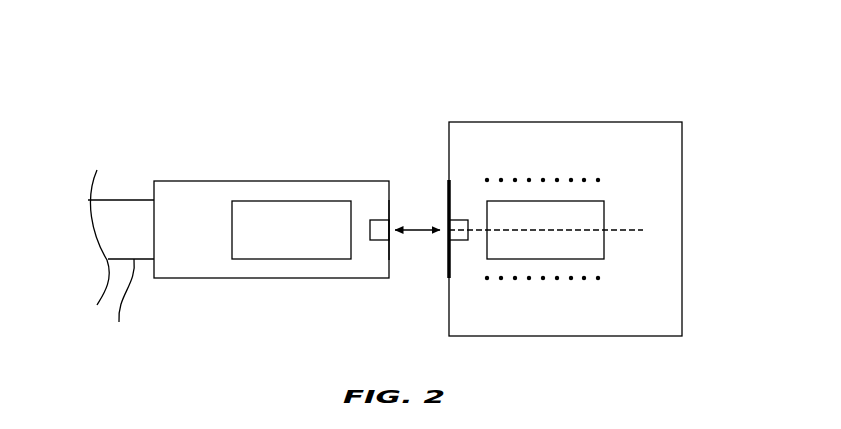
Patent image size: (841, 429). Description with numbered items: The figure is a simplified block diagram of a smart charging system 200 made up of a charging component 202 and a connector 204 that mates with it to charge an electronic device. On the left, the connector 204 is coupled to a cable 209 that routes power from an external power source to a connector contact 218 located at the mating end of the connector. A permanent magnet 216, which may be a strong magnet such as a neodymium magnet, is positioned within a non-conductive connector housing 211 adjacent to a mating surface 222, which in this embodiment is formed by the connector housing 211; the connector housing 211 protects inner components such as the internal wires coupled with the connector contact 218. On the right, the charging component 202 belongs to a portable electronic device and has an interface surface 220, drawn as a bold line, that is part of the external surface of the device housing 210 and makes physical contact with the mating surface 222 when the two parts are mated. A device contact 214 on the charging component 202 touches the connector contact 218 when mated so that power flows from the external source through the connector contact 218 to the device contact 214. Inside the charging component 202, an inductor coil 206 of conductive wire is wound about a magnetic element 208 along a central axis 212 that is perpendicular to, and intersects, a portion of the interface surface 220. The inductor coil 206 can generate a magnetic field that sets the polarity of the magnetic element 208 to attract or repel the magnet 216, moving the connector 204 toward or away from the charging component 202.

The smart charging system 200 is at (246, 63).
The charging component 202 is at (639, 105).
The connector 204 is at (213, 165).
The inductor coil 206 is at (528, 180).
The magnetic element 208 is at (545, 230).
The cable 209 is at (115, 264).
The housing 210 is at (572, 336).
The connector housing 211 is at (320, 278).
The central axis 212 is at (618, 230).
The device contact 214 is at (454, 243).
The permanent magnet 216 is at (291, 230).
The connector contact 218 is at (374, 220).
The interface surface 220 is at (449, 205).
The mating surface 222 is at (389, 220).